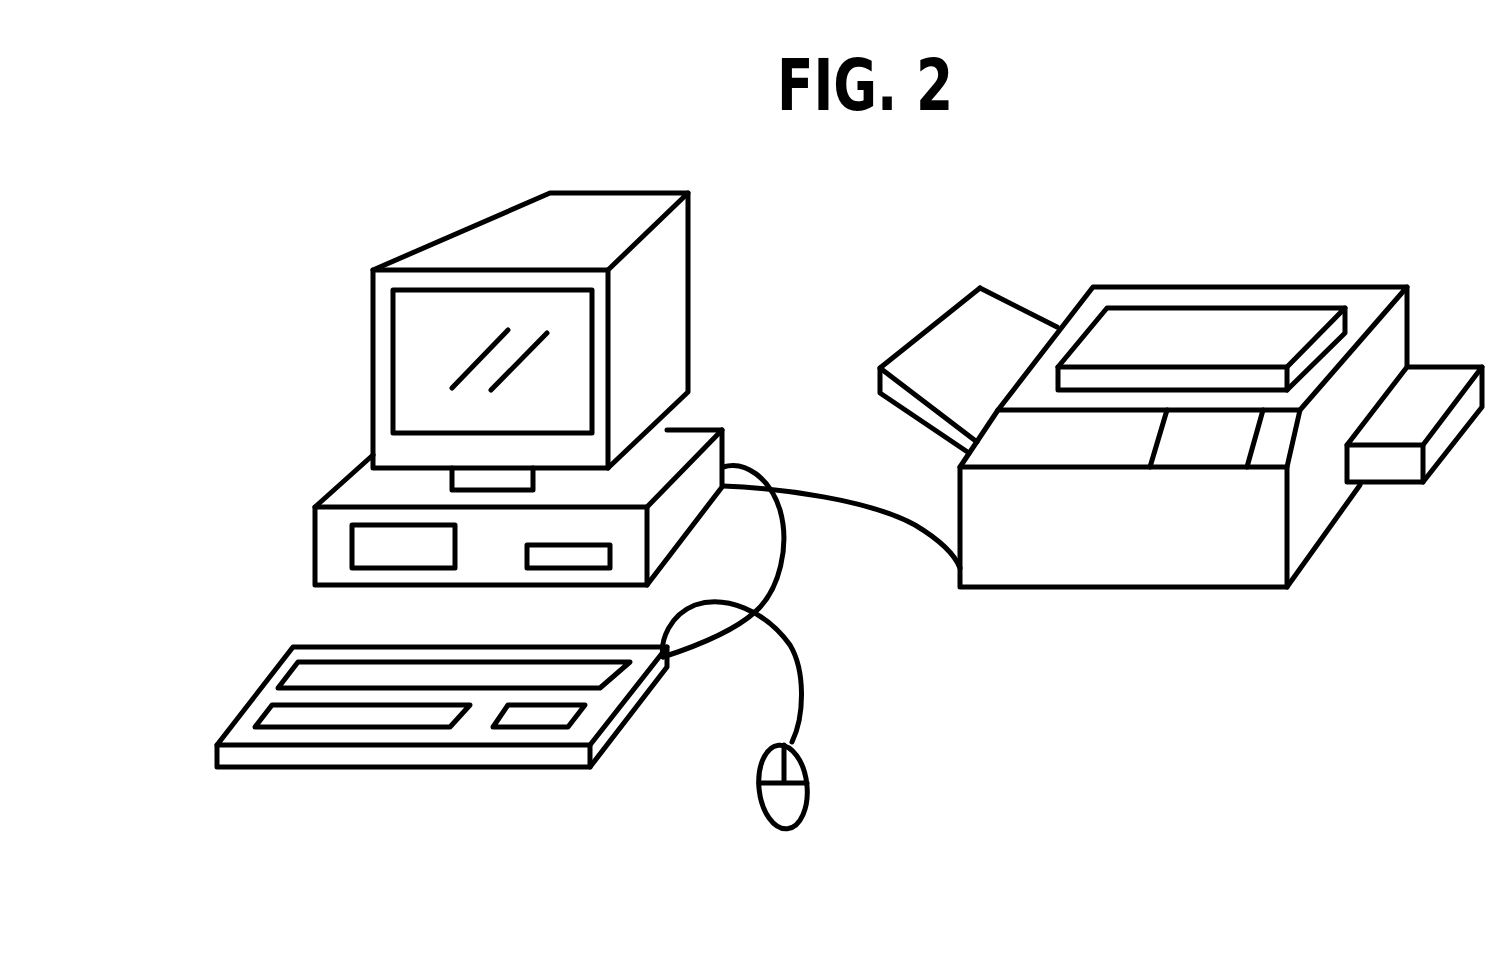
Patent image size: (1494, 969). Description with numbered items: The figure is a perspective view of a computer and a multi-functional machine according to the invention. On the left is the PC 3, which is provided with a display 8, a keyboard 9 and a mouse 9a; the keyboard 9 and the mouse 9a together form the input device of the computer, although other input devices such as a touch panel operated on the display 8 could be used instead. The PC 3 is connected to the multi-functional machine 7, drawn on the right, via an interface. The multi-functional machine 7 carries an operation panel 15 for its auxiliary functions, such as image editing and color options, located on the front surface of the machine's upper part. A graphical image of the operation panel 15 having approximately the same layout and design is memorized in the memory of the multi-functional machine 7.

The PC 3 is at (315, 547).
The display 8 is at (413, 356).
The keyboard 9 is at (227, 770).
The mouse 9a is at (783, 807).
The multi-functional machine 7 is at (1235, 573).
The operation panel 15 is at (1207, 445).